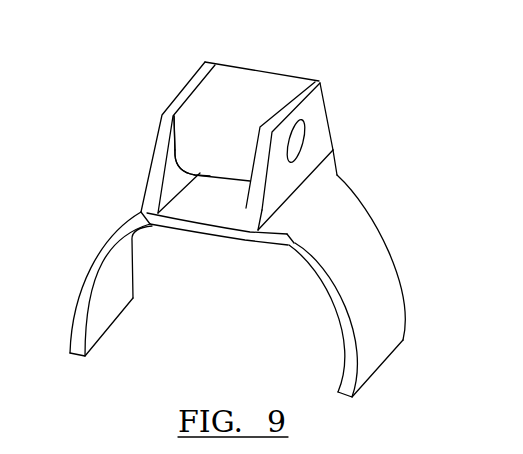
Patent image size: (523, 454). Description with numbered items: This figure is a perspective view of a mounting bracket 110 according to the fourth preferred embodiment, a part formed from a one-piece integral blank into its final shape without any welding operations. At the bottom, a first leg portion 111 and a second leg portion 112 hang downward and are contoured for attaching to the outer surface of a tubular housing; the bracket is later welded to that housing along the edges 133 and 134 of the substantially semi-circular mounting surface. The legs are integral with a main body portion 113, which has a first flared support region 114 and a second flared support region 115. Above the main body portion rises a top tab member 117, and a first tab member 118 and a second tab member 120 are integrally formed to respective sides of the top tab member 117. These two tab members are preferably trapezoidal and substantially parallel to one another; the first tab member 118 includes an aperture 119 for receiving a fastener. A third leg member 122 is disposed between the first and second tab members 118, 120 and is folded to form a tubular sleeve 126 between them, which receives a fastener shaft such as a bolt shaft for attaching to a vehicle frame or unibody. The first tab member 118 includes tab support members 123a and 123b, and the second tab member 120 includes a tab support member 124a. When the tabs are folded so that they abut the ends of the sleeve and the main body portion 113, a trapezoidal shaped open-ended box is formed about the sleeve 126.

The mounting bracket 110 is at (396, 107).
The first leg portion 111 is at (370, 254).
The second leg portion 112 is at (97, 318).
The main body portion 113 is at (205, 203).
The first flared support region 114 is at (293, 247).
The second flared support region 115 is at (327, 165).
The top tab member 117 is at (228, 83).
The first tab member 118 is at (321, 82).
The aperture 119 is at (314, 104).
The second tab member 120 is at (157, 128).
The third leg member 122 is at (197, 147).
The tab support member 123a is at (268, 199).
The tab support member 123b is at (323, 140).
The tab support member 124a is at (140, 208).
The sleeve 126 is at (200, 160).
The edge 133 is at (87, 280).
The edge 134 is at (133, 288).